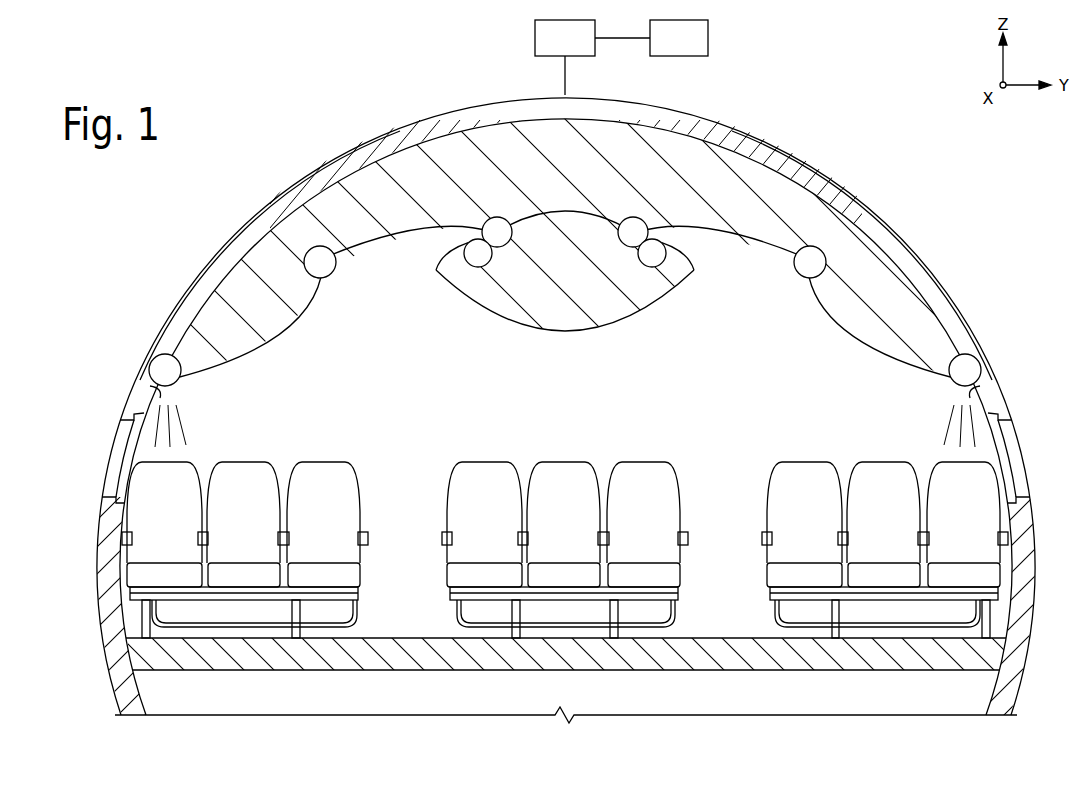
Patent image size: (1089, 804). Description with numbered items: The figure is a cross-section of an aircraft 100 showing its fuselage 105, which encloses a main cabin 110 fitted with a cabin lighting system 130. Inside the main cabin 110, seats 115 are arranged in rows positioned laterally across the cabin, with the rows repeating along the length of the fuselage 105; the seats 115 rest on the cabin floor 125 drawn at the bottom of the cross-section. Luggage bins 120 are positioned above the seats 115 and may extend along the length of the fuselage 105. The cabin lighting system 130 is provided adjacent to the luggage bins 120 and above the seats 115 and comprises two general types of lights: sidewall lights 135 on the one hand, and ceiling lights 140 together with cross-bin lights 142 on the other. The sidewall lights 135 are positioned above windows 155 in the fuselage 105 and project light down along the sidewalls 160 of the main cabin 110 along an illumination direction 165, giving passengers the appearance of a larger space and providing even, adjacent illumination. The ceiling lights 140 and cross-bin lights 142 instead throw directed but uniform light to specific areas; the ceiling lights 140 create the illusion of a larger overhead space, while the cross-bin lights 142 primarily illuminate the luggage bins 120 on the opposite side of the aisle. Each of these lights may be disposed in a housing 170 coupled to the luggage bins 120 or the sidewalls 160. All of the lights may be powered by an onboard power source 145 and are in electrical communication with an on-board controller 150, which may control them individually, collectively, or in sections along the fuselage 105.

The aircraft 100 is at (960, 178).
The fuselage 105 is at (383, 132).
The main cabin 110 is at (478, 392).
The seats 115 is at (278, 457).
The luggage bins 120 is at (270, 342).
The floor 125 is at (706, 636).
The cabin lighting system 130 is at (457, 315).
The sidewall lights 135 is at (173, 381).
The ceiling lights 140 is at (484, 235).
The cross-bin lights 142 is at (466, 262).
The onboard power source 145 is at (665, 49).
The on-board controller 150 is at (551, 49).
The windows 155 is at (112, 447).
The sidewalls 160 is at (150, 398).
The illumination direction 165 is at (188, 438).
The housing 170 is at (311, 251).